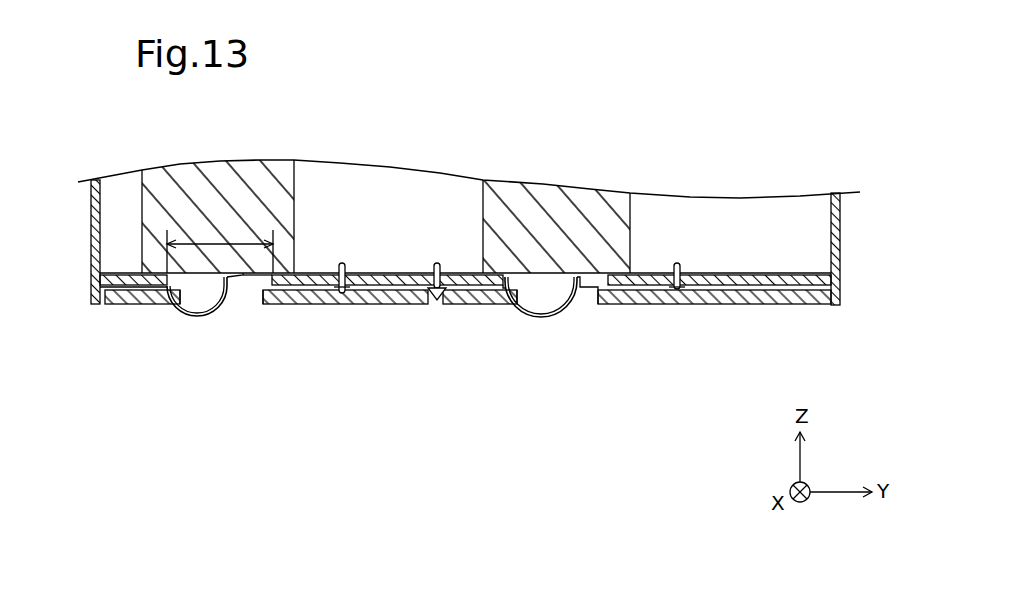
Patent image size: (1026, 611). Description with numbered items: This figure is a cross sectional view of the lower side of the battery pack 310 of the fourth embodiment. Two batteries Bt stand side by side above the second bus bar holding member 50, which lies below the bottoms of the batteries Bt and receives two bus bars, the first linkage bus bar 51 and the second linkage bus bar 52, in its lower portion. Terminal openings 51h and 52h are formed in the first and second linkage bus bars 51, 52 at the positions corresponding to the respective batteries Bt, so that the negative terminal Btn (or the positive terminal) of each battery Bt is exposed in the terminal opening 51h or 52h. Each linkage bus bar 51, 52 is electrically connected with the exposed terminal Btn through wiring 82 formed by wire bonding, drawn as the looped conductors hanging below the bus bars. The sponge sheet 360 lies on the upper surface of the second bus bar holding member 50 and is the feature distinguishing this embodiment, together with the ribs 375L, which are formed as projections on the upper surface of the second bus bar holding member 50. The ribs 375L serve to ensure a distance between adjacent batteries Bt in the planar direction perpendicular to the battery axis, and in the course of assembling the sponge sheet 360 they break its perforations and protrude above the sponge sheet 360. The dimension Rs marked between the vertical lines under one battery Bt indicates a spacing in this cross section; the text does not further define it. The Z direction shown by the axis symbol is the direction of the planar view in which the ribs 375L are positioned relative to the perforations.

The battery pack 310 is at (764, 178).
The second bus bar holding member 50 is at (802, 305).
The battery Bt is at (140, 192).
The negative terminal Btn is at (250, 276).
The sponge sheet 360 is at (786, 276).
The first linkage bus bar 51 is at (355, 306).
The terminal opening 51h is at (267, 288).
The second linkage bus bar 52 is at (475, 306).
The terminal opening 52h is at (592, 305).
The wiring 82 is at (193, 317).
The rib 375L is at (437, 262).
The button spacing Rs is at (220, 247).